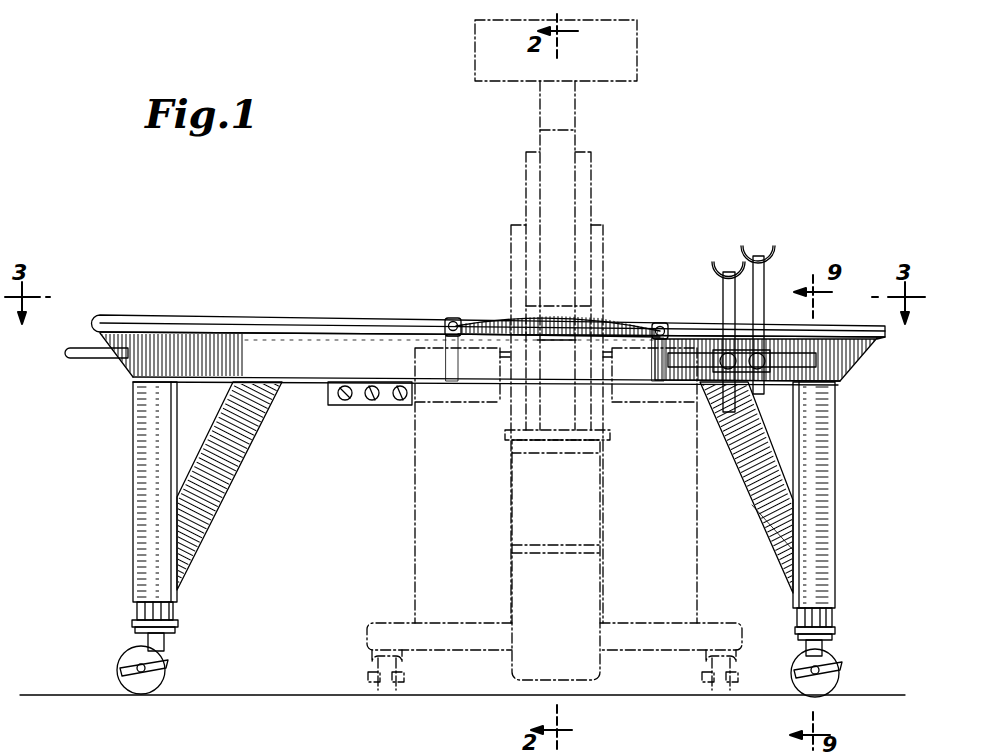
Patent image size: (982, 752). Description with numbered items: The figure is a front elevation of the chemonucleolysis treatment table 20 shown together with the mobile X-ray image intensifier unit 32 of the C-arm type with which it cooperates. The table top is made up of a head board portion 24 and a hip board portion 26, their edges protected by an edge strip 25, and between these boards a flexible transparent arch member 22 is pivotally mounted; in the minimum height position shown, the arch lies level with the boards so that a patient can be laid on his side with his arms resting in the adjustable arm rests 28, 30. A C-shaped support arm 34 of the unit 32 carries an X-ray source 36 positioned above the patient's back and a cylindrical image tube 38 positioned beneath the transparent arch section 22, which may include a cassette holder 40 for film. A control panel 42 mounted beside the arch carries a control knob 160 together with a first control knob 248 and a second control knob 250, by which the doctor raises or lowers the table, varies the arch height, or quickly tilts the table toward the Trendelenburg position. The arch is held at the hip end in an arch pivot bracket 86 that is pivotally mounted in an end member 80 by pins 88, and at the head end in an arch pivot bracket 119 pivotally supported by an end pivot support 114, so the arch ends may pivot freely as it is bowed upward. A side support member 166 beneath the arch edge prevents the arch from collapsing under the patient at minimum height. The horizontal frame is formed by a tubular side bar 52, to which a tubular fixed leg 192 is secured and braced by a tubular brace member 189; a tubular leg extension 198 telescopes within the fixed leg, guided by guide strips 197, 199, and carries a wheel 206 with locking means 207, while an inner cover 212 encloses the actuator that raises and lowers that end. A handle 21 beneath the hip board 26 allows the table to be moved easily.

The chemonucleolysis treatment table 20 is at (380, 242).
The handle 21 is at (88, 364).
The transparent arch member 22 is at (488, 318).
The head board portion 24 is at (770, 324).
The edge strip 25 is at (166, 318).
The hip board portion 26 is at (276, 316).
The adjustable arm rest 28 is at (770, 272).
The adjustable arm rest 30 is at (718, 288).
The mobile X-ray image intensifier unit 32 is at (412, 544).
The C-shaped support arm 34 is at (540, 140).
The X-ray source 36 is at (625, 82).
The cylindrical image tube 38 is at (512, 665).
The cassette holder 40 is at (506, 438).
The control panel 42 is at (326, 400).
The tubular side bar 52 is at (328, 384).
The end member 80 is at (450, 320).
The arch pivot bracket 86 is at (456, 320).
The pin 88 is at (460, 330).
The end pivot support 114 is at (662, 326).
The arch pivot bracket 119 is at (657, 325).
The control knob 160 is at (399, 402).
The side support member 166 is at (553, 334).
The tubular brace member 189 is at (754, 512).
The tubular fixed leg 192 is at (838, 432).
The guide strip 197 is at (800, 632).
The tubular leg extension 198 is at (830, 612).
The guide strip 199 is at (805, 619).
The wheel 206 is at (840, 680).
The locking means 207 is at (124, 660).
The inner cover 212 is at (792, 430).
The first control knob 248 is at (344, 402).
The second control knob 250 is at (372, 402).